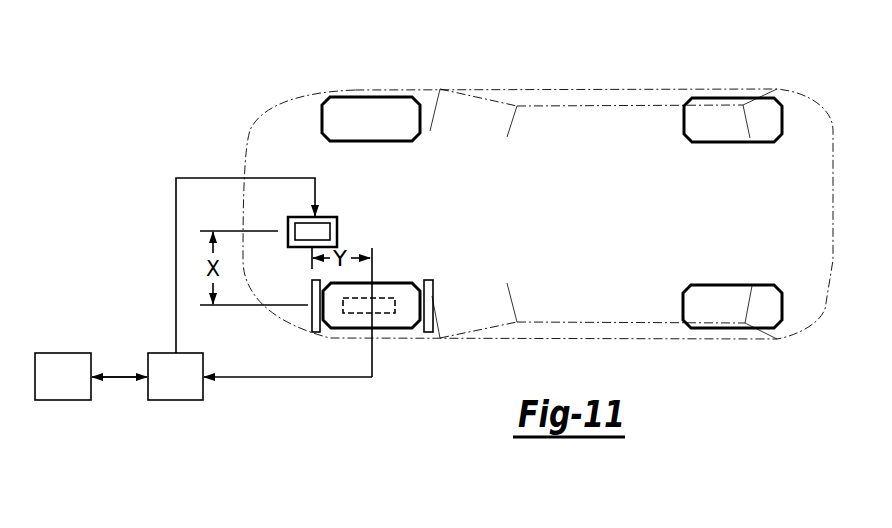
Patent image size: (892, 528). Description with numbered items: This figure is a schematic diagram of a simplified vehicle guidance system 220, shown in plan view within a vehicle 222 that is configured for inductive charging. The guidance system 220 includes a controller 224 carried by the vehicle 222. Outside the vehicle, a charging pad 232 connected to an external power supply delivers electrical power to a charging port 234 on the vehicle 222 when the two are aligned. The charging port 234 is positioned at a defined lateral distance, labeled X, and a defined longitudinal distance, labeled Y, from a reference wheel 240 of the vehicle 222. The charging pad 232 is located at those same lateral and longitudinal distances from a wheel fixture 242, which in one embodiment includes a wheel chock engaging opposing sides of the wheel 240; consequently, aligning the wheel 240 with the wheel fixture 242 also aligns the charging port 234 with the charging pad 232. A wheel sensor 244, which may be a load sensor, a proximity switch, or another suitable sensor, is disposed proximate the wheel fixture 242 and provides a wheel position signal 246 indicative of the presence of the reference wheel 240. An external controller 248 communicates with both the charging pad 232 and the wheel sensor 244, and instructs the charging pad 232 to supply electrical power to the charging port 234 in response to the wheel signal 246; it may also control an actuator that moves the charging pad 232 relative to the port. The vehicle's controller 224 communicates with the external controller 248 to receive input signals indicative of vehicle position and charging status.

The vehicle guidance system 220 is at (492, 262).
The vehicle 222 is at (723, 90).
The controller 224 is at (91, 376).
The charging pad 232 is at (327, 215).
The charging port 234 is at (330, 229).
The reference wheel 240 is at (377, 330).
The wheel fixture 242 is at (309, 313).
The wheel sensor 244 is at (372, 298).
The wheel position signal 246 is at (297, 378).
The external controller 248 is at (231, 289).